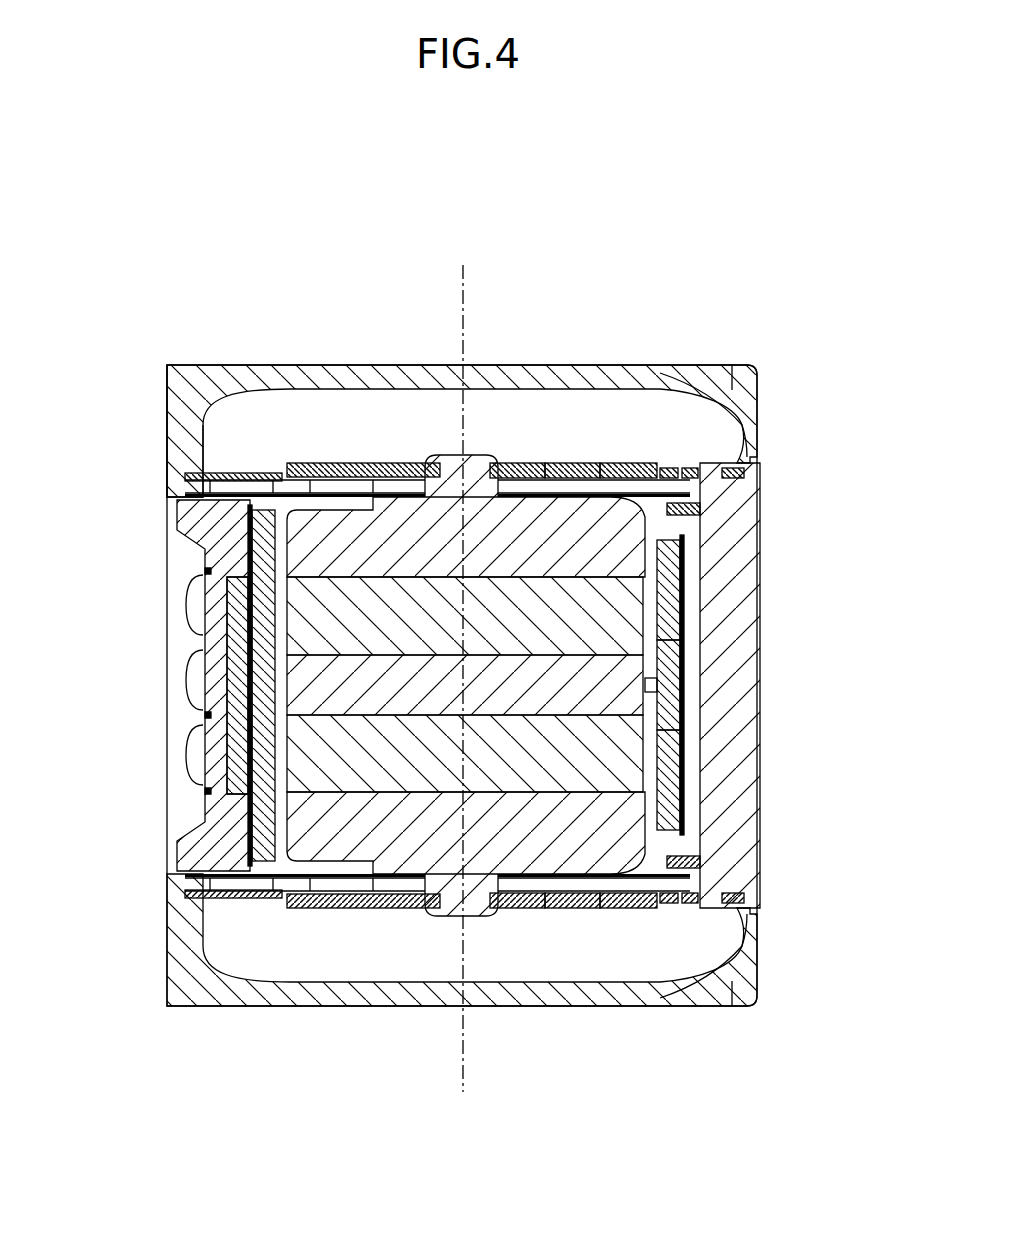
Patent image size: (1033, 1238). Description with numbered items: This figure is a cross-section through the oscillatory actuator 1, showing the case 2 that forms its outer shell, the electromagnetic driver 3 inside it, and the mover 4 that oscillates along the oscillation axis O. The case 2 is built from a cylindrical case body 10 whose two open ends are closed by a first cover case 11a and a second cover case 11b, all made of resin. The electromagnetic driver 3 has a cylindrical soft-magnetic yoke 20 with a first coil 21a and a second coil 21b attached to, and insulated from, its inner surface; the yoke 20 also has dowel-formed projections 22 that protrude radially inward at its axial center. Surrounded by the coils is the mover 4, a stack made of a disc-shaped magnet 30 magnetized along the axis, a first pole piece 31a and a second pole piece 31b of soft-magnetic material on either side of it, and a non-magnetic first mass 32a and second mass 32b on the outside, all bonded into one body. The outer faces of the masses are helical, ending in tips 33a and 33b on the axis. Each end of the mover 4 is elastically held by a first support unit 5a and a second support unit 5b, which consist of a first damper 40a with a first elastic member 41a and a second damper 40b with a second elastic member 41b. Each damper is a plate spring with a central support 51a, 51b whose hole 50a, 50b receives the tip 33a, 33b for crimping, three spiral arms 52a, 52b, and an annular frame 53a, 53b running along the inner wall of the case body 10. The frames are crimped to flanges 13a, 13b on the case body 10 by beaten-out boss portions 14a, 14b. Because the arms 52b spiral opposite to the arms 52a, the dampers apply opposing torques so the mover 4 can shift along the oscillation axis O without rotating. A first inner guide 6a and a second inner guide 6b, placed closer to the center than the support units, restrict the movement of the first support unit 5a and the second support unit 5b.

The oscillatory actuator 1 is at (752, 270).
The case 2 is at (155, 438).
The electromagnetic driver 3 is at (765, 685).
The mover 4 is at (342, 685).
The first support unit 5a is at (312, 362).
The second support unit 5b is at (312, 1017).
The first inner guide 6a is at (745, 514).
The second inner guide 6b is at (745, 862).
The case body 10 is at (760, 563).
The first cover case 11a is at (760, 412).
The second cover case 11b is at (760, 955).
The flanges 13a is at (665, 466).
The flanges 13b is at (665, 905).
The boss portions 14a is at (700, 466).
The boss portions 14b is at (700, 905).
The yoke 20 is at (680, 690).
The first coil 21a is at (665, 622).
The second coil 21b is at (665, 752).
The projections 22 is at (832, 600).
The magnet 30 is at (320, 687).
The first pole piece 31a is at (320, 622).
The second pole piece 31b is at (320, 752).
The first mass 32a is at (320, 543).
The second mass 32b is at (369, 833).
The tip 33a is at (450, 452).
The tip 33b is at (450, 919).
The first damper 40a is at (249, 457).
The second damper 40b is at (249, 913).
The first elastic member 41a is at (363, 390).
The first elastic member 41b is at (358, 918).
The hole 50a is at (497, 460).
The hole 50b is at (497, 911).
The support 51a is at (545, 462).
The support 51b is at (545, 909).
The arms 52a is at (612, 462).
The arms 52b is at (612, 909).
The frame 53a is at (735, 466).
The frame 53b is at (735, 905).
The oscillation axis O is at (463, 663).